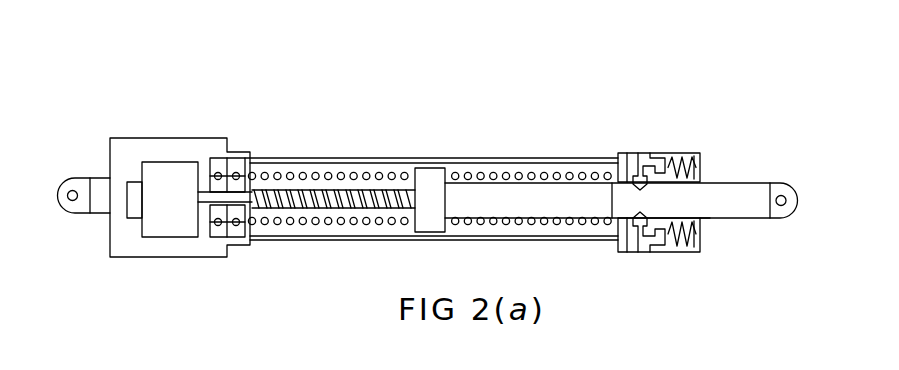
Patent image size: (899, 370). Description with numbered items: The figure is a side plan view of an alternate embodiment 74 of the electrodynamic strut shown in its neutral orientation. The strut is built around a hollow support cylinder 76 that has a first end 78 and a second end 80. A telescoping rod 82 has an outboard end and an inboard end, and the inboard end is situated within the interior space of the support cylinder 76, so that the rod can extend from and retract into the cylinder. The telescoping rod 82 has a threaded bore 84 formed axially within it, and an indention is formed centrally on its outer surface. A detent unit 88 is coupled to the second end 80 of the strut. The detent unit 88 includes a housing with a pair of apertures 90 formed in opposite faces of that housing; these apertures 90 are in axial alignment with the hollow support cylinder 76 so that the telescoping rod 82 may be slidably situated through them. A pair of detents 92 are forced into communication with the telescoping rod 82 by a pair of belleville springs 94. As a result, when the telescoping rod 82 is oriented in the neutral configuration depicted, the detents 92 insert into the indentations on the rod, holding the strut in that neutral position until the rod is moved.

The alternate embodiment 74 is at (808, 109).
The hollow support cylinder 76 is at (510, 160).
The first end 78 is at (272, 238).
The second end 80 is at (583, 238).
The telescoping rod 82 is at (730, 188).
The threaded bore 84 is at (412, 218).
The detent unit 88 is at (688, 255).
The apertures 90 is at (700, 224).
The detents 92 is at (643, 153).
The belleville springs 94 is at (692, 152).